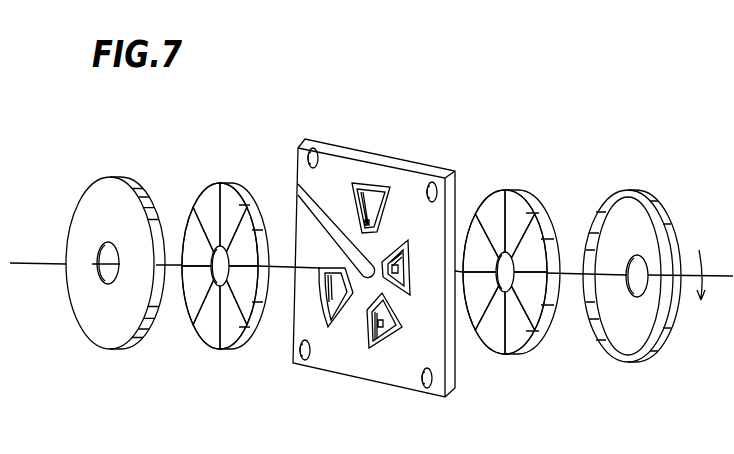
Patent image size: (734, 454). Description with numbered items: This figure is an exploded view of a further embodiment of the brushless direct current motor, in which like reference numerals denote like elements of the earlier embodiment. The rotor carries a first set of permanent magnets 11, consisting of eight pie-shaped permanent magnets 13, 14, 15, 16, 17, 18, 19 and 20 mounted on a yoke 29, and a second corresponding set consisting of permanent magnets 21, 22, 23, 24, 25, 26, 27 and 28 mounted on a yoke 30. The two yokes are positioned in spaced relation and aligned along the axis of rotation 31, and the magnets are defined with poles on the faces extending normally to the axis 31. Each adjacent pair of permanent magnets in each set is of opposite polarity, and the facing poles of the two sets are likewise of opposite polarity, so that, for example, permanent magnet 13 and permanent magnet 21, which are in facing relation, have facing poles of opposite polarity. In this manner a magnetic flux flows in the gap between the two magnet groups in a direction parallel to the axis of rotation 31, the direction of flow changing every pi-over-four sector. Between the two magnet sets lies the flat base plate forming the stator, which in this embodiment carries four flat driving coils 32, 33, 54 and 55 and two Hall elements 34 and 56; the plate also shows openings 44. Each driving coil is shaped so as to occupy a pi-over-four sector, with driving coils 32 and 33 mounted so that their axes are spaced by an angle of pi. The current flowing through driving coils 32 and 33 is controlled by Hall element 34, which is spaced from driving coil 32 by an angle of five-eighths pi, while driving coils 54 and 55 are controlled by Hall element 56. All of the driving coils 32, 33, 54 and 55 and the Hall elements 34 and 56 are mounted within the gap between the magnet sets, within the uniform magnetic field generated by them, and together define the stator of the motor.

The first set of permanent magnets 11 is at (222, 183).
The permanent magnet 13 is at (226, 220).
The permanent magnet 14 is at (236, 257).
The permanent magnet 15 is at (236, 294).
The permanent magnet 16 is at (225, 332).
The permanent magnet 17 is at (198, 332).
The permanent magnet 18 is at (188, 292).
The permanent magnet 19 is at (188, 257).
The permanent magnet 20 is at (202, 218).
The permanent magnet 21 is at (513, 232).
The permanent magnet 22 is at (524, 263).
The permanent magnet 23 is at (524, 302).
The permanent magnet 24 is at (511, 335).
The permanent magnet 25 is at (485, 337).
The permanent magnet 26 is at (473, 303).
The permanent magnet 27 is at (473, 261).
The permanent magnet 28 is at (488, 222).
The yoke 29 is at (113, 178).
The yoke 30 is at (633, 191).
The axis of rotation 31 is at (32, 263).
The driving coil 32 is at (372, 184).
The driving coil 33 is at (409, 267).
The Hall element 34 is at (395, 362).
The mounting hole 44 is at (313, 150).
The driving coil 54 is at (388, 338).
The driving coil 55 is at (322, 303).
The Hall element 56 is at (399, 267).